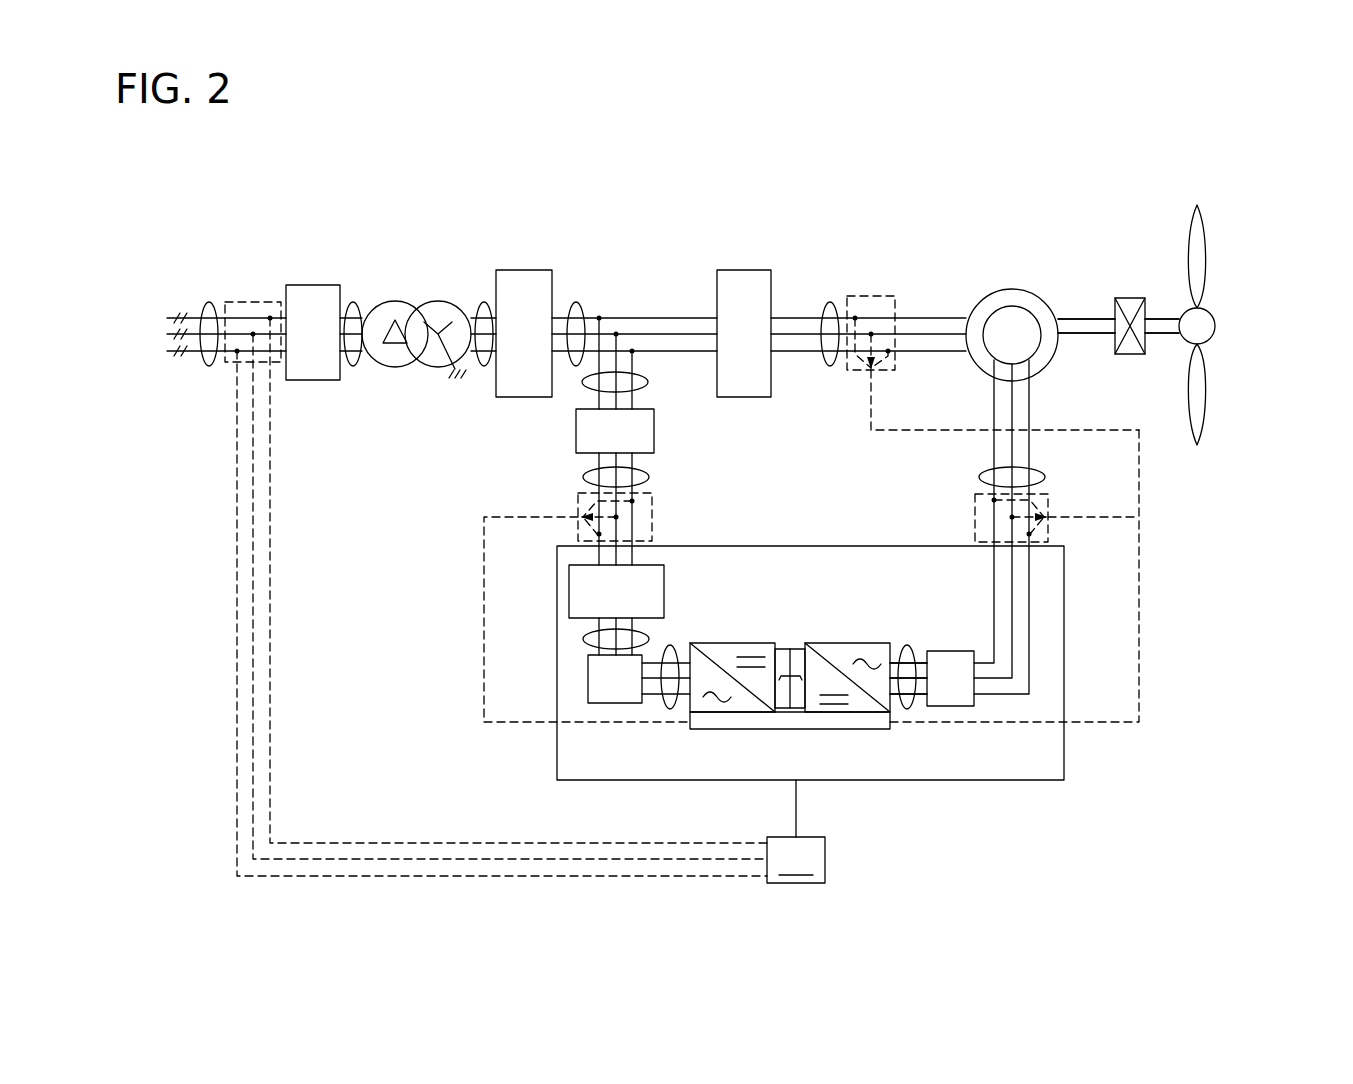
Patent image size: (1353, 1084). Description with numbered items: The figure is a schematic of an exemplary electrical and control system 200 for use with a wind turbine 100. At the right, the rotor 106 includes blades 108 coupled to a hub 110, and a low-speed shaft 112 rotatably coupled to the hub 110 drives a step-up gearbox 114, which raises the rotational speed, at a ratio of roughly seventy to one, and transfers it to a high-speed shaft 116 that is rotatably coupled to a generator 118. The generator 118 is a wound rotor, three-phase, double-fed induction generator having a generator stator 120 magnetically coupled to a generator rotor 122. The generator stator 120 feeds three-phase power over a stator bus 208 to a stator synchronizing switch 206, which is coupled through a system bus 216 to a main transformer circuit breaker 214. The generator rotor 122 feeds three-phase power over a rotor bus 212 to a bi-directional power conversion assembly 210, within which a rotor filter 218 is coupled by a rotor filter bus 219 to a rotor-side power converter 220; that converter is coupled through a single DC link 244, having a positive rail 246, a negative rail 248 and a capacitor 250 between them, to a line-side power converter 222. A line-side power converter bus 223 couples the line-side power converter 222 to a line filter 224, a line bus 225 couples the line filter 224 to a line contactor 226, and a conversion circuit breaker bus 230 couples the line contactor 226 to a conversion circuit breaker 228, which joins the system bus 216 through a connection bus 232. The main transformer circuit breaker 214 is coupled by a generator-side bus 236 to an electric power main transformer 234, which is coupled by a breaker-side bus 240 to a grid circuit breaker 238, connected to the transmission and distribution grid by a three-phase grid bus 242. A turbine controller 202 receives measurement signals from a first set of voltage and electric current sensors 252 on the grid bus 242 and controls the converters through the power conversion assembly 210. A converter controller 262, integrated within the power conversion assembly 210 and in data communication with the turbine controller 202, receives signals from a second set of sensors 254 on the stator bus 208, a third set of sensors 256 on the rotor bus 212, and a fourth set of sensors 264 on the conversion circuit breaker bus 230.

The wind turbine 100 is at (1183, 187).
The rotor 106 is at (1222, 303).
The blades 108 is at (1207, 263).
The hub 110 is at (1216, 326).
The low-speed shaft 112 is at (1160, 319).
The step-up gearbox 114 is at (1128, 298).
The high-speed shaft 116 is at (1085, 319).
The generator 118 is at (1015, 250).
The generator stator 120 is at (1012, 290).
The generator rotor 122 is at (1006, 313).
The electrical and control system 200 is at (262, 172).
The turbine controller 202 is at (796, 860).
The stator synchronizing switch 206 is at (750, 270).
The stator bus 208 is at (830, 302).
The power conversion assembly 210 is at (1064, 660).
The rotor bus 212 is at (1045, 477).
The main transformer circuit breaker 214 is at (528, 270).
The system bus 216 is at (576, 302).
The rotor filter 218 is at (943, 651).
The rotor filter bus 219 is at (907, 645).
The rotor-side power converter 220 is at (897, 706).
The line-side power converter 222 is at (690, 712).
The line-side power converter bus 223 is at (670, 645).
The line filter 224 is at (588, 680).
The line bus 225 is at (583, 639).
The line contactor 226 is at (569, 590).
The conversion circuit breaker 228 is at (654, 430).
The conversion circuit breaker bus 230 is at (649, 477).
The connection bus 232 is at (648, 380).
The electric power main transformer 234 is at (438, 301).
The generator-side bus 236 is at (484, 298).
The grid circuit breaker 238 is at (310, 285).
The breaker-side bus 240 is at (353, 302).
The grid bus 242 is at (209, 302).
The DC link 244 is at (775, 605).
The positive rail 246 is at (805, 645).
The negative rail 248 is at (802, 710).
The capacitor 250 is at (783, 675).
The first set of voltage and electric current sensors 252 is at (228, 372).
The second set of voltage and electric current sensors 254 is at (886, 294).
The third set of voltage and electric current sensors 256 is at (963, 513).
The converter controller 262 is at (848, 722).
The fourth set of voltage and electric current sensors 264 is at (652, 517).